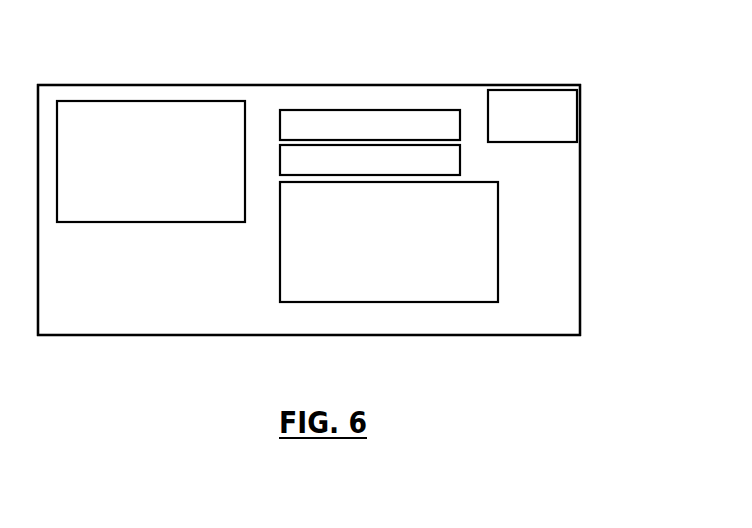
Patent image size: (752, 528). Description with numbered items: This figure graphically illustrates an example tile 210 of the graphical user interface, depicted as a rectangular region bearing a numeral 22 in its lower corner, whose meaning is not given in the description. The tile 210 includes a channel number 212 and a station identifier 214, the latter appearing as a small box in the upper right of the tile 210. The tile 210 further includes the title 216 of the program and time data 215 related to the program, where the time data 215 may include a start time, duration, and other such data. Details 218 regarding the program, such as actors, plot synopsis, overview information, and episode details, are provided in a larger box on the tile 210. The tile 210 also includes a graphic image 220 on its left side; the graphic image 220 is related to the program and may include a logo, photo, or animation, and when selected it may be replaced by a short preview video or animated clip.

The display screen 22 is at (309, 210).
The tile 210 is at (612, 119).
The channel number 212 is at (109, 311).
The station identifier 214 is at (478, 100).
The time data 215 is at (426, 118).
The title 216 is at (445, 162).
The details 218 is at (415, 263).
The graphic image 220 is at (119, 120).